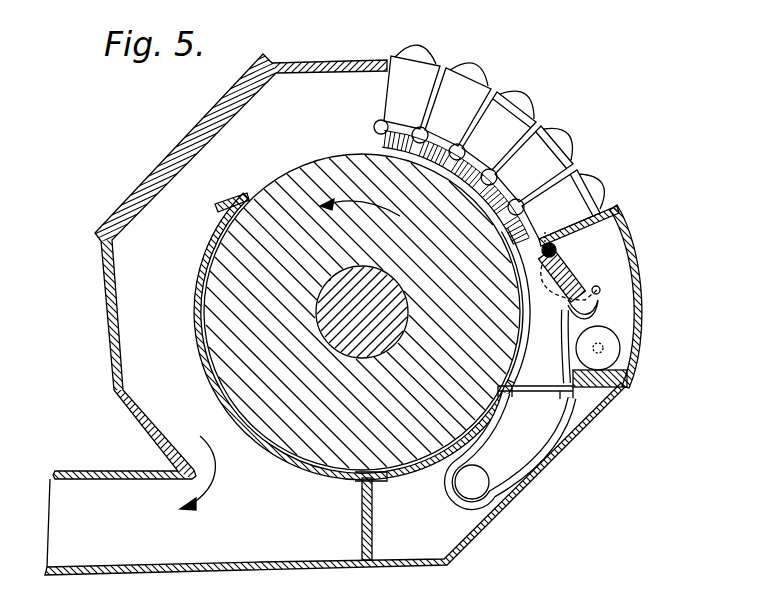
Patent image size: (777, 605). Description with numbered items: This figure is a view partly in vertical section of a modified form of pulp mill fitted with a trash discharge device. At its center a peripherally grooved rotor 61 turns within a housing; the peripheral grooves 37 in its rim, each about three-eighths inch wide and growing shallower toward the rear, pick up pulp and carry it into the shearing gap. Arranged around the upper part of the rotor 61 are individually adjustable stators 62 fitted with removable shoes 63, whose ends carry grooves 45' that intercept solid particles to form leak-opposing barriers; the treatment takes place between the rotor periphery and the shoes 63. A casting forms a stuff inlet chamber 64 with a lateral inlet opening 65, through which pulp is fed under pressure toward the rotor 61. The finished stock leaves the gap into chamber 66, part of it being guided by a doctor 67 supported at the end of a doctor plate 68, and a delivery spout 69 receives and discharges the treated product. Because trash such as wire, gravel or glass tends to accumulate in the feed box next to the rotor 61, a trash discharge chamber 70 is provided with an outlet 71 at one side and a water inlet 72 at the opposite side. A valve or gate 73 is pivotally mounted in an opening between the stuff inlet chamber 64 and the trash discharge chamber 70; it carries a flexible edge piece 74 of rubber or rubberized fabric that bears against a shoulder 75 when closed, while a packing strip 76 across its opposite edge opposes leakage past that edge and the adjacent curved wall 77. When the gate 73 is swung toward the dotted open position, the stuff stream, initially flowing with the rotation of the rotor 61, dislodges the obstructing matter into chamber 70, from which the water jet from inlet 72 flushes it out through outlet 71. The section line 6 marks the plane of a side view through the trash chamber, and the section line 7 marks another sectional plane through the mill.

The section line 6- 6 is at (512, 348).
The section line 7- 7 is at (480, 42).
The peripheral grooves 37 is at (466, 170).
The pole piece band 45' is at (440, 178).
The peripherally grooved rotor 61 is at (312, 420).
The individually adjustable stators 62 is at (473, 92).
The removable shoes 63 is at (437, 142).
The stuff inlet chamber 64 is at (510, 408).
The lateral inlet opening 65 is at (470, 490).
The discharge chamber 66 is at (388, 302).
The doctor 67 is at (233, 200).
The doctor plate 68 is at (205, 362).
The delivery spout 69 is at (87, 485).
The trash discharge chamber 70 is at (620, 298).
The trash discharge outlet 71 is at (607, 360).
The water inlet 72 is at (603, 344).
The valve or gate 73 is at (565, 285).
The flexible edge piece 74 is at (556, 246).
The shoulder 75 is at (543, 238).
The packing strip 76 is at (580, 312).
The curved wall 77 is at (598, 294).